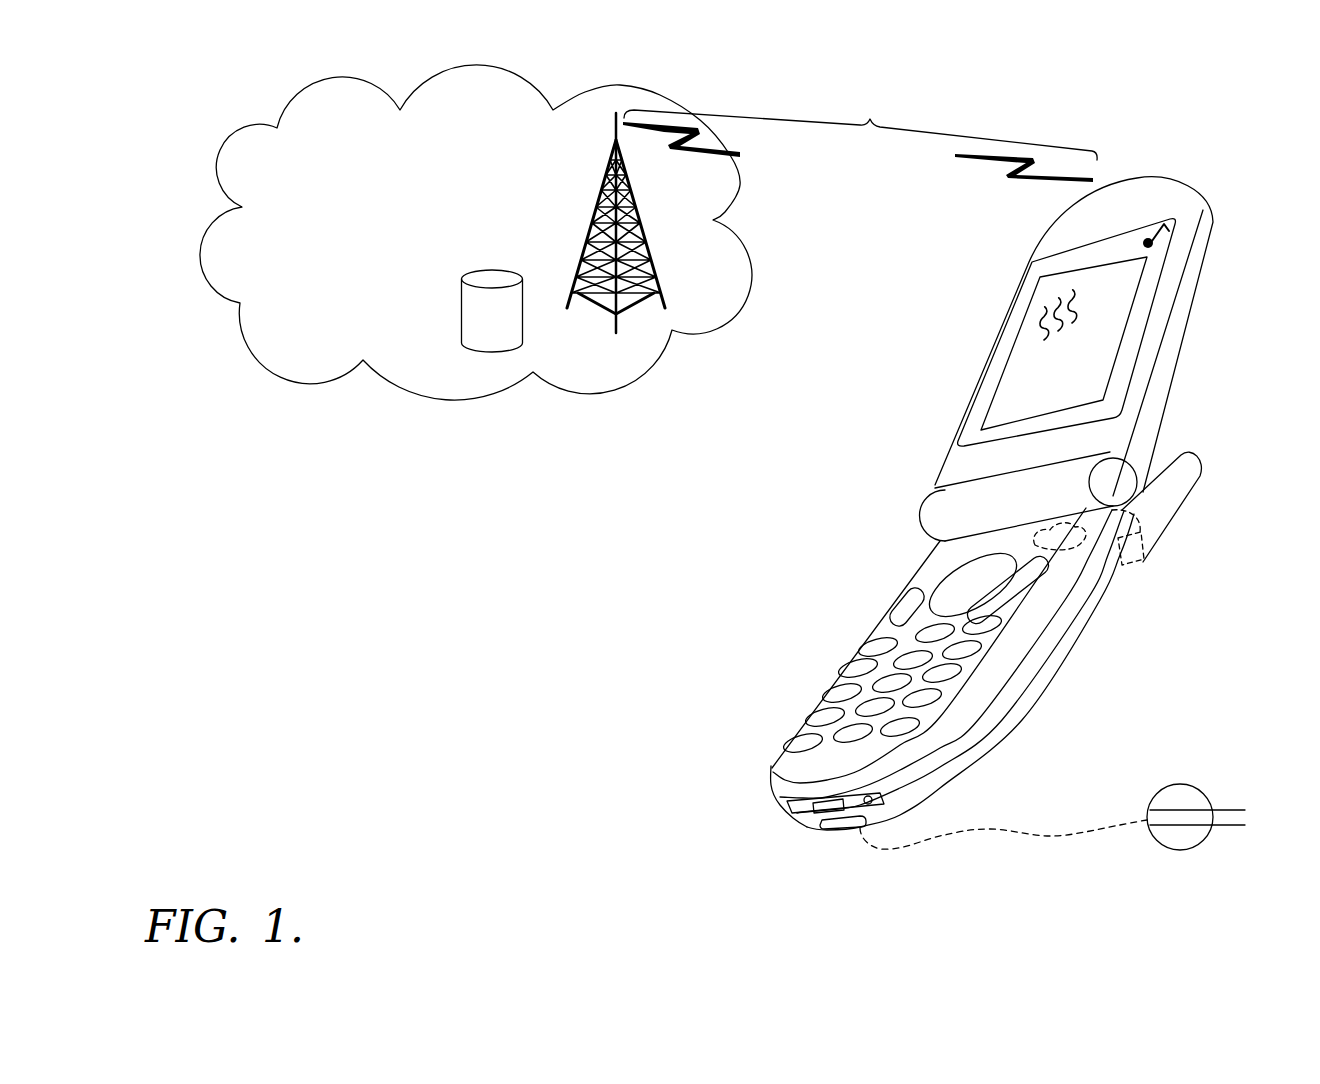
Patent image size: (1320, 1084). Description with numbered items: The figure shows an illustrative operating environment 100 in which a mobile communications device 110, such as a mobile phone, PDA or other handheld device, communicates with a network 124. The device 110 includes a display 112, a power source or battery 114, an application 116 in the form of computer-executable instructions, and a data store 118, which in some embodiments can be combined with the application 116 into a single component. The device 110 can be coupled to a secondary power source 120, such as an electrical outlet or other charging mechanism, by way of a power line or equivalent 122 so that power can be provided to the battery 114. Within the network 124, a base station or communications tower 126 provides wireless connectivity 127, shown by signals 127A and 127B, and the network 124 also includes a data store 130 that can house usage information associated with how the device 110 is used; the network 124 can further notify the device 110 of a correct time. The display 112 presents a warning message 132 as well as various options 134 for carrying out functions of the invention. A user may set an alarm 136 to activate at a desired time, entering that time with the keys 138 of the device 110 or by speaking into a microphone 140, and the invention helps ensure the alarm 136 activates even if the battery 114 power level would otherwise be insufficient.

The operating environment 100 is at (395, 801).
The mobile communications device 110 is at (818, 683).
The display 112 is at (1026, 363).
The battery 114 is at (1040, 678).
The application 116 is at (1060, 548).
The data store 118 is at (1135, 565).
The secondary power source 120 is at (1182, 851).
The power line 122 is at (978, 830).
The network 124 is at (643, 362).
The base station or communications tower 126 is at (592, 229).
The wireless connectivity 127 is at (860, 128).
The signal 127A is at (743, 155).
The signal 127B is at (1002, 163).
The data store 130 is at (461, 320).
The warning message 132 is at (1008, 393).
The options 134 is at (1038, 318).
The alarm 136 is at (1165, 245).
The keys 138 is at (840, 754).
The microphone 140 is at (785, 773).